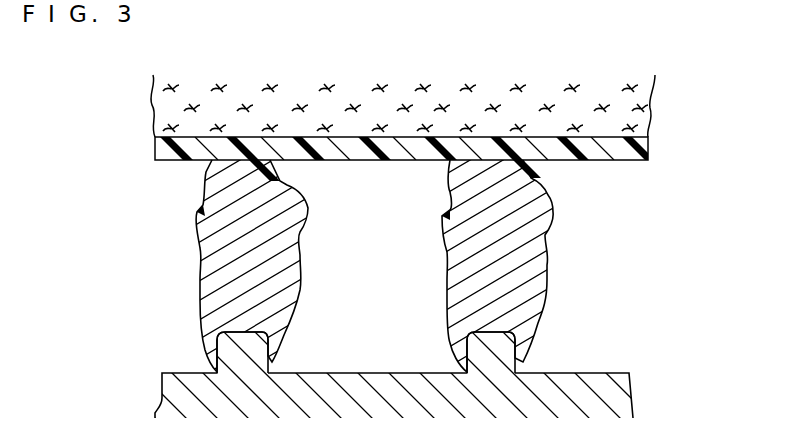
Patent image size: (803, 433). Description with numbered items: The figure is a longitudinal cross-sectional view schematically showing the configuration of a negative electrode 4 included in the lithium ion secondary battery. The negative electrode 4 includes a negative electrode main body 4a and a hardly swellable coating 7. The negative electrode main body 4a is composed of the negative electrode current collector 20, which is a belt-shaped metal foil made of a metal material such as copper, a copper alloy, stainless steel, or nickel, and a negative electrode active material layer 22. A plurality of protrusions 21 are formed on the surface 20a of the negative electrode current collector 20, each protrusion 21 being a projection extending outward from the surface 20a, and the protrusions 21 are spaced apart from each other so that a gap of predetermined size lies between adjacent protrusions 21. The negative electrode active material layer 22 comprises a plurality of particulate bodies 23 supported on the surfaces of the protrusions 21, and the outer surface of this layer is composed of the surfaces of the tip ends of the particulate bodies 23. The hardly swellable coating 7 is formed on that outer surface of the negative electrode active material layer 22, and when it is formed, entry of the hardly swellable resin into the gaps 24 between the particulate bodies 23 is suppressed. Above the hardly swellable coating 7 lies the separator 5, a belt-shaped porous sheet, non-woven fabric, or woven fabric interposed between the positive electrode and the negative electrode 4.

The negative electrode 4 is at (124, 79).
The negative electrode main body 4a is at (705, 223).
The separator 5 is at (652, 108).
The hardly swellable coating 7 is at (648, 148).
The negative electrode current collector 20 is at (615, 405).
The surface of the negative electrode current collector 20a is at (607, 372).
The protrusion 21 is at (203, 305).
The negative electrode active material layer 22 is at (596, 277).
The particulate body 23 is at (284, 204).
The gap 24 is at (347, 307).